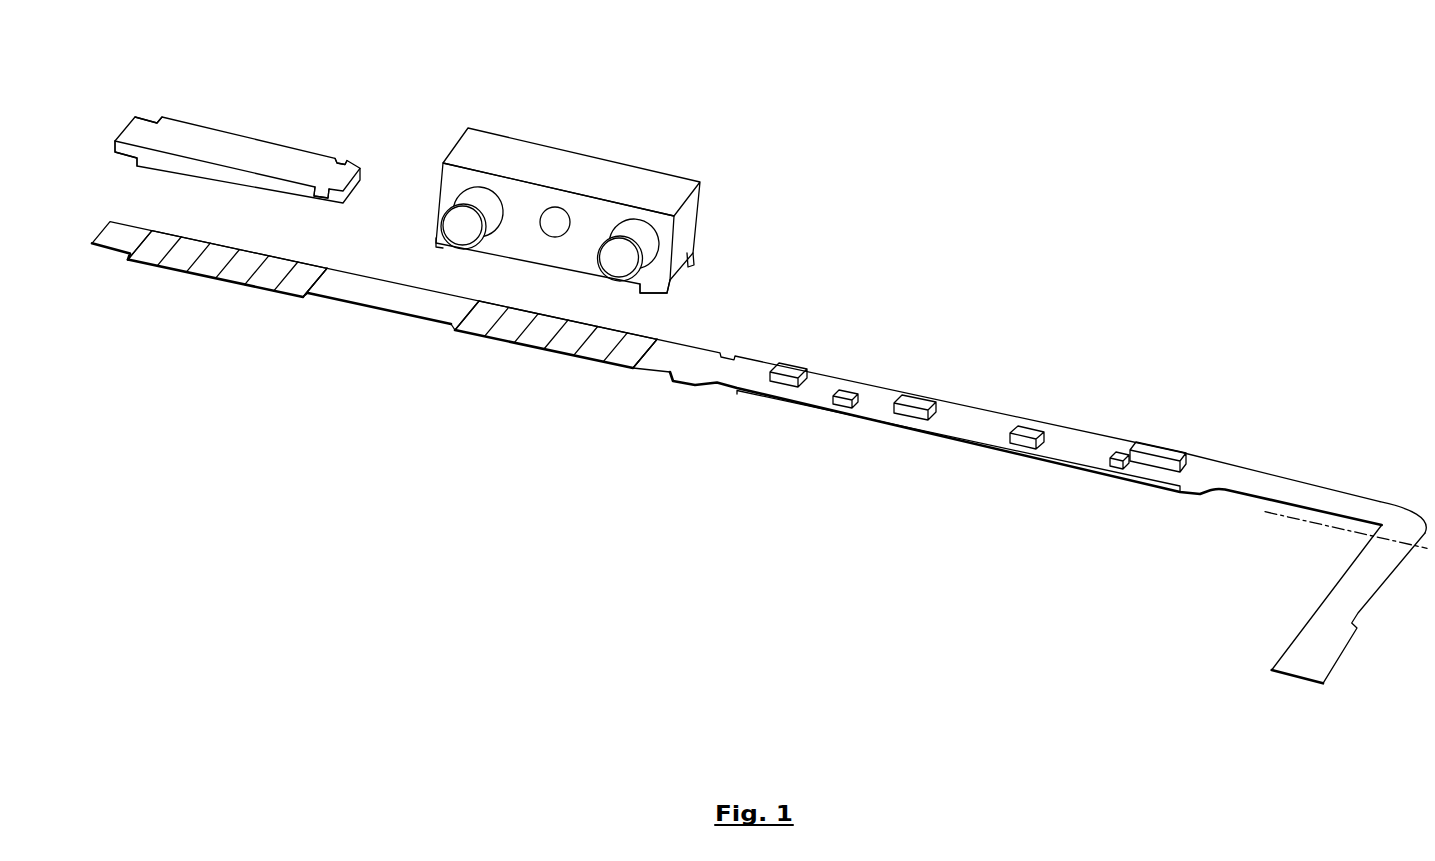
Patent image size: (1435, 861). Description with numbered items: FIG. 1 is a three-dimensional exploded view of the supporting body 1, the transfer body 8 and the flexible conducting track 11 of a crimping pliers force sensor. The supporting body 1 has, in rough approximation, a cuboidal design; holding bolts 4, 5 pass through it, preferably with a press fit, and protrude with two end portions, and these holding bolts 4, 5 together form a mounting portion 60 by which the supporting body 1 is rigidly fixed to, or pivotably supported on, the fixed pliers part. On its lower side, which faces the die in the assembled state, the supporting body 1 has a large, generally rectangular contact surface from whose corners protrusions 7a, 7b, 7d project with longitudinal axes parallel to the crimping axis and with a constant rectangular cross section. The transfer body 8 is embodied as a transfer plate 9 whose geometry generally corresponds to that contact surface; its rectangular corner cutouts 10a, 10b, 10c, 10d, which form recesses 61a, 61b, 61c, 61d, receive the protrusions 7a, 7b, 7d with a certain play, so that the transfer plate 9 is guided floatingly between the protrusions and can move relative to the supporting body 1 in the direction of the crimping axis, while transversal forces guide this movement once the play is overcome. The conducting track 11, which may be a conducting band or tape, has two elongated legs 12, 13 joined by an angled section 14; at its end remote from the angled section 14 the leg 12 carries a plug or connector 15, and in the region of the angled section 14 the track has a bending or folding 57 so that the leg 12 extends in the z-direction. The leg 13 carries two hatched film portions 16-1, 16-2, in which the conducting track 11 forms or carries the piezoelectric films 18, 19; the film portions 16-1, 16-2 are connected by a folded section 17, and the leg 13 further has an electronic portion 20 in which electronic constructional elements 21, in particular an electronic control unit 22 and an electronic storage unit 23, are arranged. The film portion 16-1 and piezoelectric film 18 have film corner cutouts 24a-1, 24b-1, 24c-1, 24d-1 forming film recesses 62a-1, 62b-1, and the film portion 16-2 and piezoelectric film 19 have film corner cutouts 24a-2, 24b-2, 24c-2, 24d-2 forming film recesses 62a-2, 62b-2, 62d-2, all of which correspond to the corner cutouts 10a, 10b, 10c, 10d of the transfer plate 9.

The supporting body 1 is at (578, 180).
The mounting portion 60 is at (643, 208).
The holding bolt 4 is at (458, 224).
The holding bolt 5 is at (630, 268).
The protrusion 7a is at (665, 290).
The protrusion 7b is at (440, 246).
The protrusion 7d is at (692, 260).
The transfer body 8 is at (238, 141).
The transfer plate 9 is at (238, 141).
The rectangular corner cutout 10a is at (326, 217).
The rectangular corner cutout 10b is at (100, 166).
The rectangular corner cutout 10c is at (109, 79).
The rectangular corner cutout 10d is at (377, 112).
The recess 61a is at (321, 198).
The recess 61b is at (115, 148).
The recess 61c is at (152, 118).
The recess 61d is at (350, 163).
The conducting track 11 is at (1130, 428).
The leg 12 is at (1343, 608).
The leg 13 is at (973, 420).
The angled section 14 is at (1402, 518).
The plug or connector 15 is at (1308, 664).
The film portion 16-1 is at (227, 334).
The piezoelectric film 18 is at (218, 256).
The film portion 16-2 is at (556, 396).
The piezoelectric film 19 is at (553, 335).
The folded section 17 is at (382, 297).
The electronic portion 20 is at (990, 433).
The electronic constructional element 21 is at (823, 320).
The electronic control unit 22 is at (921, 402).
The electronic storage unit 23 is at (786, 370).
The film corner cutout 24a-1 is at (284, 325).
The film corner cutout 24b-1 is at (121, 279).
The film corner cutout 24c-1 is at (152, 229).
The film corner cutout 24d-1 is at (328, 265).
The film recess 62a-1 is at (304, 298).
The film recess 62b-1 is at (128, 259).
The film corner cutout 24a-2 is at (690, 402).
The film corner cutout 24b-2 is at (467, 354).
The film corner cutout 24c-2 is at (479, 302).
The film corner cutout 24d-2 is at (720, 335).
The film recess 62a-2 is at (634, 371).
The film recess 62b-2 is at (456, 331).
The film recess 62d-2 is at (660, 340).
The bending or folding 57 is at (1313, 525).